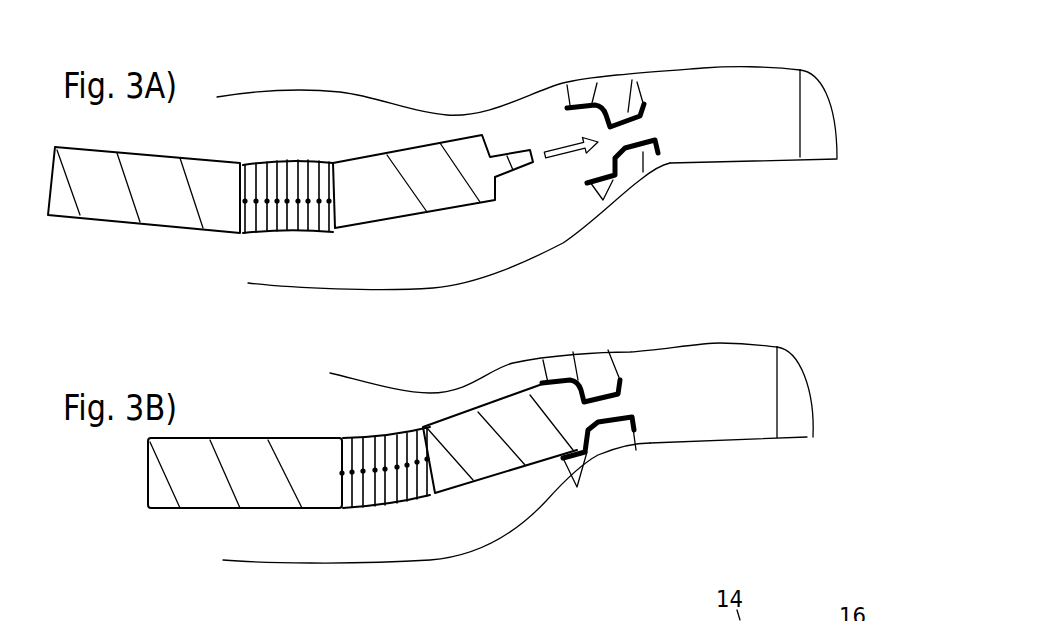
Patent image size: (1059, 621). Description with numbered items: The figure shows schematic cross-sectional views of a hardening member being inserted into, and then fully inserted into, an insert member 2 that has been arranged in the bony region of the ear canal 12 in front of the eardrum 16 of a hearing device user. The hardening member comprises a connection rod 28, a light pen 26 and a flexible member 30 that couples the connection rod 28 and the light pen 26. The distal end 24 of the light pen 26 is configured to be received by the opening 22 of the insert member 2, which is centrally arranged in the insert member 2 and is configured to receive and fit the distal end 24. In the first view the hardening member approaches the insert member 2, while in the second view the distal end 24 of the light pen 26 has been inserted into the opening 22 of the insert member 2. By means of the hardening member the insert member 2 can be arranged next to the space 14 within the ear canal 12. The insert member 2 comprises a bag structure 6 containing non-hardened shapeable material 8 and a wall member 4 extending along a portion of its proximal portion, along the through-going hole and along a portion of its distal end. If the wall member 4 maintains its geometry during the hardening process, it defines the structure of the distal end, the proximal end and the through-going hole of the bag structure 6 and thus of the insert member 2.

In FIG. 3A, the insert member 2 is at (610, 70).
In FIG. 3B, the insert member 2 is at (601, 340).
In FIG. 3A, the wall member 4 is at (639, 103).
In FIG. 3B, the wall member 4 is at (630, 378).
In FIG. 3A, the bag structure 6 is at (667, 157).
In FIG. 3B, the bag structure 6 is at (647, 443).
In FIG. 3A, the non-hardened shapeable material 8 is at (642, 172).
In FIG. 3B, the non-hardened shapeable material 8 is at (600, 455).
In FIG. 3A, the ear canal 12 is at (427, 233).
In FIG. 3A, the space 14 is at (713, 123).
In FIG. 3B, the space 14 is at (688, 380).
In FIG. 3A, the eardrum 16 is at (820, 120).
In FIG. 3B, the eardrum 16 is at (798, 408).
In FIG. 3A, the opening 22 is at (580, 128).
In FIG. 3A, the distal end 24 is at (503, 162).
In FIG. 3B, the distal end 24 is at (595, 412).
In FIG. 3A, the light pen 26 is at (423, 163).
In FIG. 3B, the light pen 26 is at (505, 407).
In FIG. 3A, the connection rod 28 is at (157, 228).
In FIG. 3B, the connection rod 28 is at (263, 508).
In FIG. 3A, the flexible member 30 is at (290, 153).
In FIG. 3B, the flexible member 30 is at (368, 423).